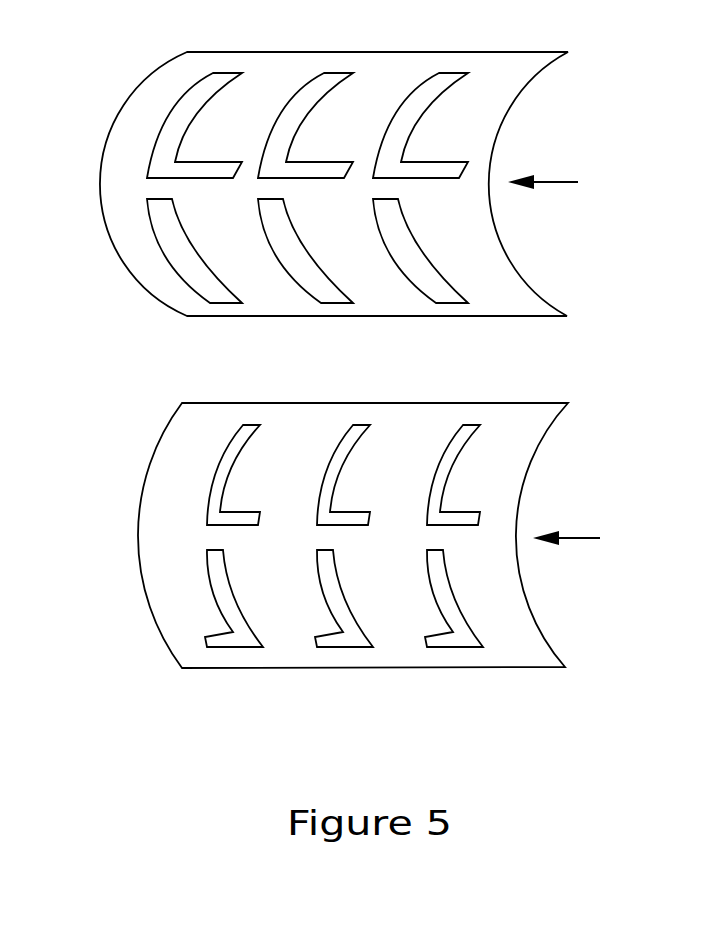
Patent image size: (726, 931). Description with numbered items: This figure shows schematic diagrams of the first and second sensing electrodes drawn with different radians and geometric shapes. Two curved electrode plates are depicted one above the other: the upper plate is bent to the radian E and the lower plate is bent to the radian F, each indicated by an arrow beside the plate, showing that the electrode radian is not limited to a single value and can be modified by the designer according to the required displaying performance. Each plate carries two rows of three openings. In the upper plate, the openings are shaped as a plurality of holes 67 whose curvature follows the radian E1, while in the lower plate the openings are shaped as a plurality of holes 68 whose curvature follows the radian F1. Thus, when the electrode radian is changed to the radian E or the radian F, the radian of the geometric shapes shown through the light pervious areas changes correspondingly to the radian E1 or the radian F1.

The radian E1 is at (175, 122).
The holes 67 is at (335, 300).
The holes 68 is at (470, 423).
The radian F1 is at (223, 595).
The radian E is at (554, 183).
The radian F is at (578, 539).